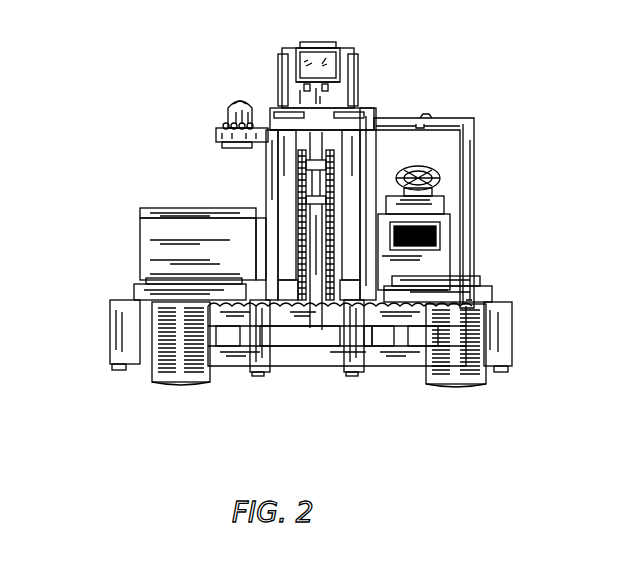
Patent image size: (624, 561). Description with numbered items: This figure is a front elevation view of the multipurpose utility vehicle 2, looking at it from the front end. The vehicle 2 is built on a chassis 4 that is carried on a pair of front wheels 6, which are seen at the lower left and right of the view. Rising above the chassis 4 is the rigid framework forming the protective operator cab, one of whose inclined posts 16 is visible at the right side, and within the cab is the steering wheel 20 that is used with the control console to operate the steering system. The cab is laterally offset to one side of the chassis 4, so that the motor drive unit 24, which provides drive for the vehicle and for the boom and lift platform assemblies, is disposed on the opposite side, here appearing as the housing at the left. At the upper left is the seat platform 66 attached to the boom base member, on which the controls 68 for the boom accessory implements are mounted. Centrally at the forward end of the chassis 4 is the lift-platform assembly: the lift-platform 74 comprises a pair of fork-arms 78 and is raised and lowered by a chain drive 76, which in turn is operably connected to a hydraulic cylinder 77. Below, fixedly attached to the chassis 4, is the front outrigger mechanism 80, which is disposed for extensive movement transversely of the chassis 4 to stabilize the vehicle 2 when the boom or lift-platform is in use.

The multipurpose utility vehicle 2 is at (416, 98).
The chassis 4 is at (148, 202).
The front wheels 6 is at (178, 368).
The inclined posts 16 is at (470, 176).
The steering wheel 20 is at (412, 174).
The motor drive unit 24 is at (172, 245).
The seat platform 66 is at (242, 110).
The controls 68 is at (220, 126).
The lift-platform 74 is at (364, 342).
The chain drive 76 is at (312, 328).
The hydraulic cylinder 77 is at (325, 326).
The fork-arms 78 is at (256, 370).
The front outrigger mechanism 80 is at (502, 316).